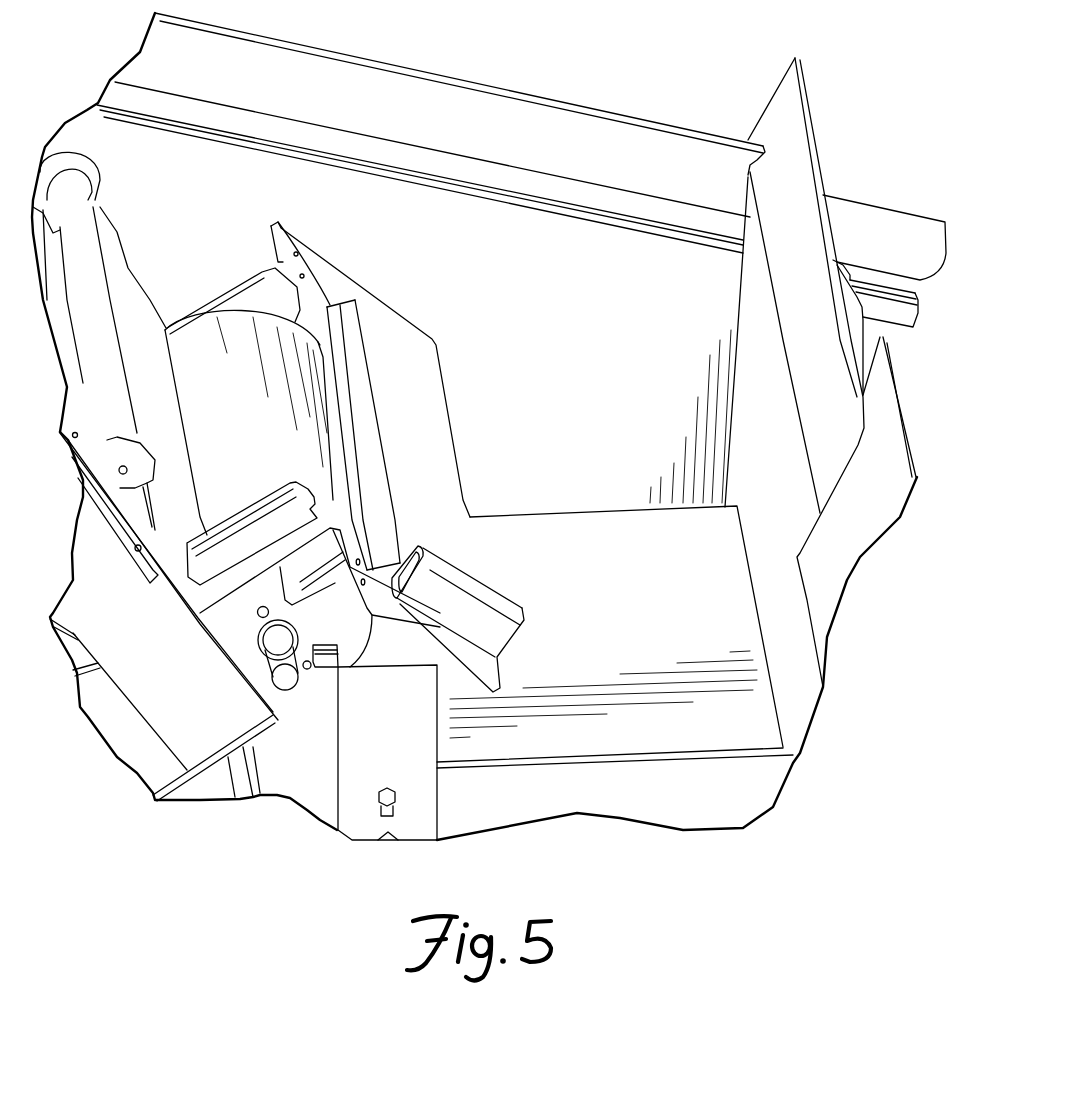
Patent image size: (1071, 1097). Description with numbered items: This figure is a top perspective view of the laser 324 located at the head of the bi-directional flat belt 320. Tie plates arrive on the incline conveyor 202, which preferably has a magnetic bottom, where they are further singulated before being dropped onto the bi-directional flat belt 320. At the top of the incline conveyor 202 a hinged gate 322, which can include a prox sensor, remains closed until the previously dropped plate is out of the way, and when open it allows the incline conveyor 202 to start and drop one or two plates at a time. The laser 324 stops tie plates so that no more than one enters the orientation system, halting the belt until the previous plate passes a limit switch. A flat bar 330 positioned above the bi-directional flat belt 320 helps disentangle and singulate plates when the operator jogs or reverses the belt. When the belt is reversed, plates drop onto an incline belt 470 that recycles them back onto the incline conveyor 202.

The incline conveyor 202 is at (238, 327).
The bi-directional flat belt 320 is at (620, 567).
The hinged gate 322 is at (430, 383).
The laser 324 is at (325, 673).
The flat bar 330 is at (647, 792).
The incline belt 470 is at (637, 260).